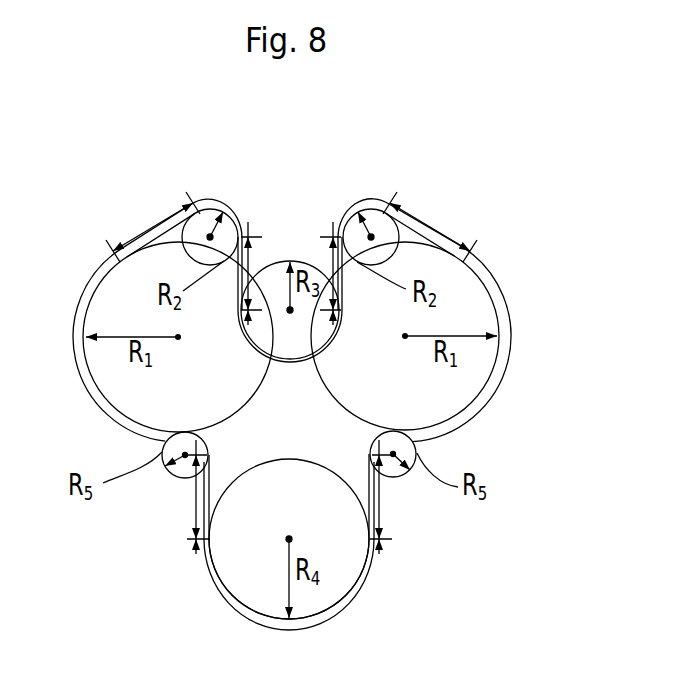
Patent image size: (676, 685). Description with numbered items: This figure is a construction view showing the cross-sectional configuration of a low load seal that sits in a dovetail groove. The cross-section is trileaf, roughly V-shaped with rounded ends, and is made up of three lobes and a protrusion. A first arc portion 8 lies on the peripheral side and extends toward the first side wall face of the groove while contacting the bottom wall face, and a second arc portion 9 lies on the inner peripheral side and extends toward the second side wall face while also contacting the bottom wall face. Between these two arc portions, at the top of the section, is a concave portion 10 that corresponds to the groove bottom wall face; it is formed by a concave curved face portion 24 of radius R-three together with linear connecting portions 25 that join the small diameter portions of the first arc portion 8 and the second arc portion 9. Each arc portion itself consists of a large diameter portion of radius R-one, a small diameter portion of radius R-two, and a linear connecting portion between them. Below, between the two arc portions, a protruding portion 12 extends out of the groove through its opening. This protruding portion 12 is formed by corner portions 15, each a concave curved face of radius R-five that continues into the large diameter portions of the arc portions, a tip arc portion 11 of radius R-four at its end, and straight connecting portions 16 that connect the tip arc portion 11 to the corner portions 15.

The first arc portion 8 is at (192, 138).
The second arc portion 9 is at (532, 138).
The concave portion 10 is at (357, 135).
The tip arc portion 11 is at (332, 620).
The protruding portion 12 is at (287, 529).
The corner portion 15 is at (198, 446).
The straight connecting portion 16 is at (203, 492).
The concave curved face portion 24 is at (282, 356).
The linear connecting portion 25 is at (263, 236).